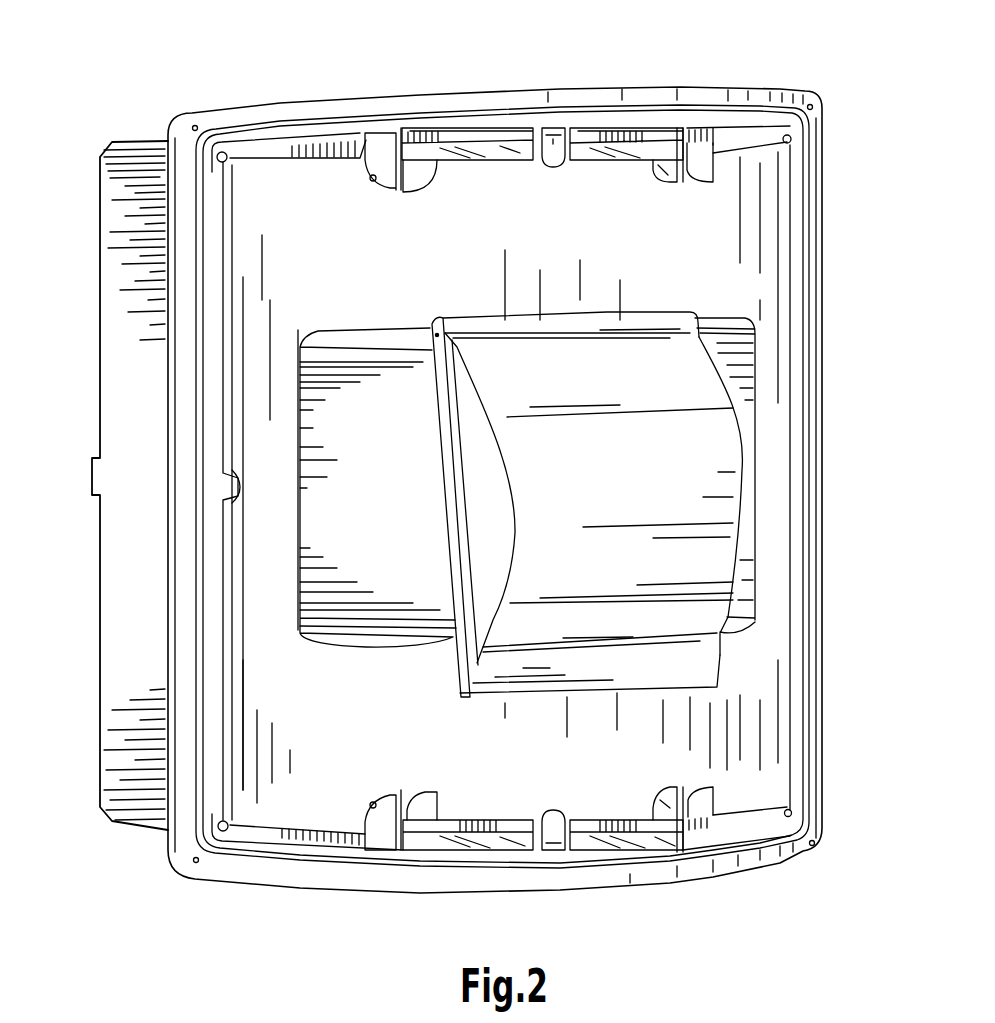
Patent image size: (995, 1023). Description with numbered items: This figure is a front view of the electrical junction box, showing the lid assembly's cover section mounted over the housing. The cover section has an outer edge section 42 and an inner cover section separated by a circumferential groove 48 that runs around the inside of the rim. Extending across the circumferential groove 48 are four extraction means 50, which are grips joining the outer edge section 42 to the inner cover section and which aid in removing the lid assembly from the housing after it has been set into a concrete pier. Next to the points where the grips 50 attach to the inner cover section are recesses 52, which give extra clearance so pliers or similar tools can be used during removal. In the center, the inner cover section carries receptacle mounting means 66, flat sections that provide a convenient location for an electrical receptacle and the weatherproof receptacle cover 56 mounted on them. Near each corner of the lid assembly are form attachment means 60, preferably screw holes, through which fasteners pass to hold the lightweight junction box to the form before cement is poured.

The outer edge section 42 is at (180, 193).
The circumferential groove 48 is at (208, 330).
The extraction means 50 is at (374, 157).
The recesses 52 is at (378, 183).
The weatherproof receptacle cover 56 is at (702, 560).
The form attachment means 60 is at (197, 125).
The receptacle mounting means 66 is at (747, 595).